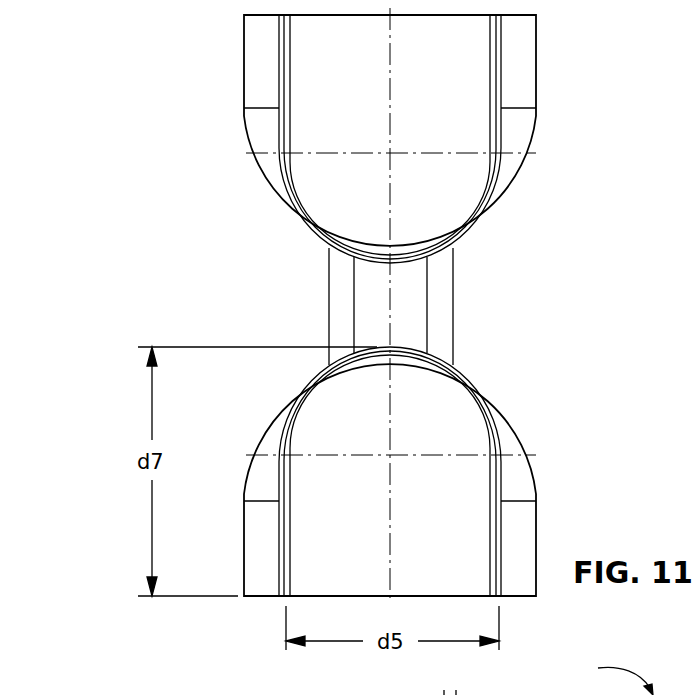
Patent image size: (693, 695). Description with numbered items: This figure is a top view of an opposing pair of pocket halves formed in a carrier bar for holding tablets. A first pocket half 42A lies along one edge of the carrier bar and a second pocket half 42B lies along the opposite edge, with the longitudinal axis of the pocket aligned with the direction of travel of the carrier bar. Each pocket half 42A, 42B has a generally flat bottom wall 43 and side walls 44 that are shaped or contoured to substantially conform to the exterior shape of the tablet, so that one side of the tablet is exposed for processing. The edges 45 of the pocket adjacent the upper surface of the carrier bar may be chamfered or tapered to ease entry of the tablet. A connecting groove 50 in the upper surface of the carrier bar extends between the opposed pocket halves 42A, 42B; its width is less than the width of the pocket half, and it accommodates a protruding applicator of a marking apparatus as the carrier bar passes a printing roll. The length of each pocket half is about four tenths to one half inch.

The first pocket half 42A is at (552, 63).
The second pocket half 42B is at (440, 471).
The connecting groove 50 is at (410, 293).
The bottom wall 43 is at (336, 530).
The side walls 44 is at (285, 557).
The edges 45 is at (262, 523).